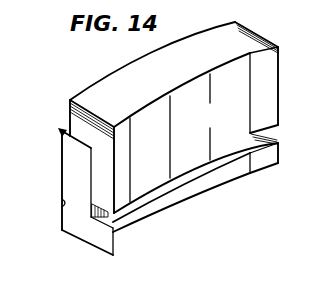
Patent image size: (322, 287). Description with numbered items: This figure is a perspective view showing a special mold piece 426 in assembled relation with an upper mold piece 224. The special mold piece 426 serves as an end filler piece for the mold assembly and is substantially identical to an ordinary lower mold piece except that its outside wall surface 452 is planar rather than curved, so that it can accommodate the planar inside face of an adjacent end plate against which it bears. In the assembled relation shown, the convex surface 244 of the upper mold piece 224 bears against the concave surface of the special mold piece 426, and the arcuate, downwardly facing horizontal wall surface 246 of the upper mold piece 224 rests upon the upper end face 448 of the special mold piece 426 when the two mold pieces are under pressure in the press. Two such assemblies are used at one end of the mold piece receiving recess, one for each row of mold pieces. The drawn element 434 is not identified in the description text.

The upper mold piece 224 is at (222, 124).
The horizontal wall surface 246 is at (84, 141).
The upper end face 448 is at (76, 139).
The convex surface 244 is at (91, 173).
The outside wall surface 452 is at (61, 206).
The special mold piece 426 is at (89, 235).
The rail 434 is at (203, 174).